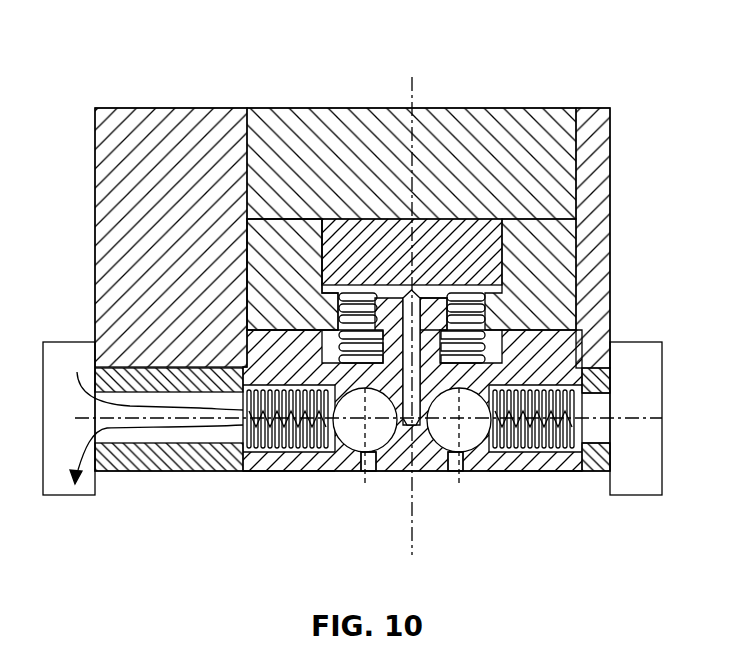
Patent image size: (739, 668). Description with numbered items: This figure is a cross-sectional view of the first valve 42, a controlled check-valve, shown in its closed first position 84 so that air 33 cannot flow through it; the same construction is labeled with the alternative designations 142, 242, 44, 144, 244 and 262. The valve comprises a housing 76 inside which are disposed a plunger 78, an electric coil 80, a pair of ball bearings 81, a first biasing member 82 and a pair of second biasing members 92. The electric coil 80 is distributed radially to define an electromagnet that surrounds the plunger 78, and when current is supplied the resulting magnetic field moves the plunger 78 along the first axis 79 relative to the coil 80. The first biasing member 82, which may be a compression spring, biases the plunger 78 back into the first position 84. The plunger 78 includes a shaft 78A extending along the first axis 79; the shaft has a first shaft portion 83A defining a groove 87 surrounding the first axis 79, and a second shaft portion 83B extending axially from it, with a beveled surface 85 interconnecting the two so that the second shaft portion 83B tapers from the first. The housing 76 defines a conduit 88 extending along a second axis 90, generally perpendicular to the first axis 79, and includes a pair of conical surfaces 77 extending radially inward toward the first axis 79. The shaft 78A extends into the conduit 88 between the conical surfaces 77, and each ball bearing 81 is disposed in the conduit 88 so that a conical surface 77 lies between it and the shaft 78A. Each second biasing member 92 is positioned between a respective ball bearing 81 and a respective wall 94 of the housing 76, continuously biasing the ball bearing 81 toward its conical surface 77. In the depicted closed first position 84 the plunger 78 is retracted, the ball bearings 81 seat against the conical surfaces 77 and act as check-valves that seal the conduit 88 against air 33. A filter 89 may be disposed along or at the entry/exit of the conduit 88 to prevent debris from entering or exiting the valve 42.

The first valve 42 is at (352, 237).
The valve assembly 142 is at (352, 237).
The valve assembly 242 is at (352, 237).
The valve 44 is at (352, 237).
The valve 144 is at (352, 237).
The valve 244 is at (352, 237).
The valve 262 is at (321, 73).
The housing 76 is at (128, 130).
The electric coil 80 is at (263, 240).
The first position 84 is at (320, 143).
The plunger 78 is at (463, 232).
The first biasing member 82 is at (276, 283).
The first shaft portion 83A is at (343, 309).
The shaft 78A is at (480, 312).
The groove 87 is at (440, 379).
The second axis 90 is at (625, 417).
The filter 89 is at (83, 497).
The air 33 is at (150, 432).
The conduit 88 is at (182, 441).
The wall 94 is at (250, 462).
The second biasing member 92 is at (283, 455).
The conical surface 77 is at (313, 447).
The ball bearing 81 is at (357, 453).
The beveled surface 85 is at (376, 472).
The second shaft portion 83B is at (447, 472).
The first axis 79 is at (410, 541).